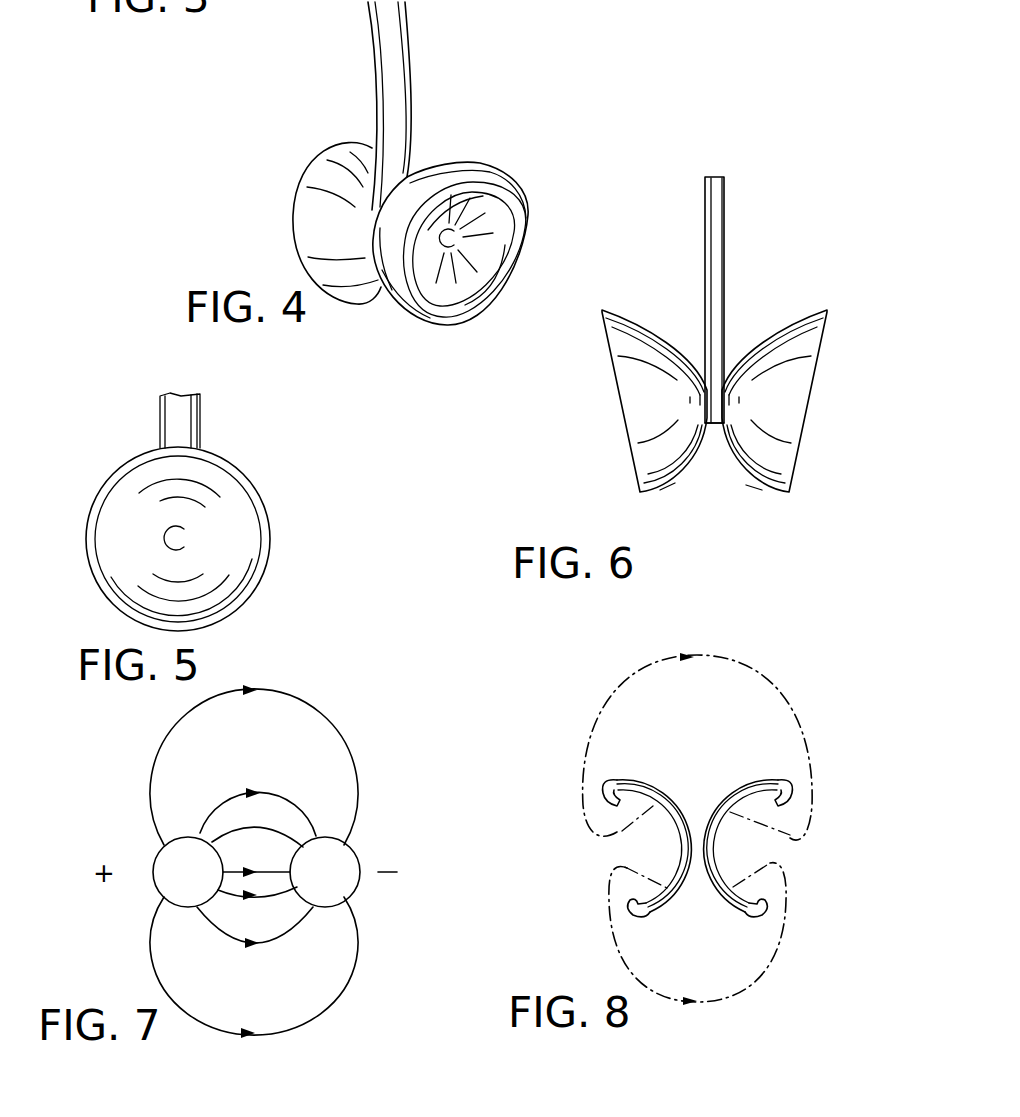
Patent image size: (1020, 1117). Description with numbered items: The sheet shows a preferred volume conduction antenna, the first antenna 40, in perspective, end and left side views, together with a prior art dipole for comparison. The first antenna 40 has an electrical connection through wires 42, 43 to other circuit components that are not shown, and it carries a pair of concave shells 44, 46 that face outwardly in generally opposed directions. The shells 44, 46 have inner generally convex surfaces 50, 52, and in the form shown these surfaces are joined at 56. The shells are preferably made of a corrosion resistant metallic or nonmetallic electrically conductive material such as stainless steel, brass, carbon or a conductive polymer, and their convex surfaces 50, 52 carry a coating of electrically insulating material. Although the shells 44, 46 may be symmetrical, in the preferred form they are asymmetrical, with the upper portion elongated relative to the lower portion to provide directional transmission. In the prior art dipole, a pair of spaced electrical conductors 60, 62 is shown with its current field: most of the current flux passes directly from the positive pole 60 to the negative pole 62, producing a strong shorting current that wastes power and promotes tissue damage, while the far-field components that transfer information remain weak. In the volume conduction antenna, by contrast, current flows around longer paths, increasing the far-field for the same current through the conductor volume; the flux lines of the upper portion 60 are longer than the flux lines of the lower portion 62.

In FIG. 4, the first antenna 40 is at (284, 167).
In FIG. 4, the wire 42 is at (379, 93).
In FIG. 6, the wire 42 is at (705, 273).
In FIG. 4, the wire 43 is at (410, 117).
In FIG. 5, the wire 43 is at (160, 425).
In FIG. 6, the wire 43 is at (724, 283).
In FIG. 4, the concave shell 44 is at (291, 223).
In FIG. 6, the concave shell 44 is at (622, 423).
In FIG. 8, the concave shell 44 is at (678, 855).
In FIG. 4, the concave shell 46 is at (500, 217).
In FIG. 5, the concave shell 46 is at (263, 538).
In FIG. 6, the concave shell 46 is at (808, 408).
In FIG. 8, the concave shell 46 is at (722, 852).
In FIG. 6, the convex surface 50 is at (672, 483).
In FIG. 6, the convex surface 52 is at (753, 478).
In FIG. 6, the joint of the shells 56 is at (712, 425).
In FIG. 7, the positive pole 60 is at (153, 860).
In FIG. 8, the positive pole 60 is at (797, 730).
In FIG. 7, the negative pole 62 is at (355, 855).
In FIG. 8, the negative pole 62 is at (747, 985).